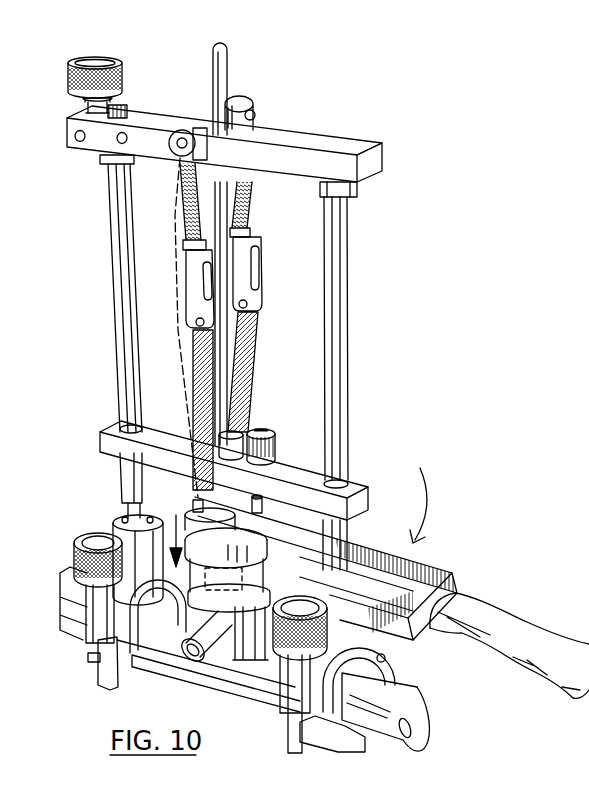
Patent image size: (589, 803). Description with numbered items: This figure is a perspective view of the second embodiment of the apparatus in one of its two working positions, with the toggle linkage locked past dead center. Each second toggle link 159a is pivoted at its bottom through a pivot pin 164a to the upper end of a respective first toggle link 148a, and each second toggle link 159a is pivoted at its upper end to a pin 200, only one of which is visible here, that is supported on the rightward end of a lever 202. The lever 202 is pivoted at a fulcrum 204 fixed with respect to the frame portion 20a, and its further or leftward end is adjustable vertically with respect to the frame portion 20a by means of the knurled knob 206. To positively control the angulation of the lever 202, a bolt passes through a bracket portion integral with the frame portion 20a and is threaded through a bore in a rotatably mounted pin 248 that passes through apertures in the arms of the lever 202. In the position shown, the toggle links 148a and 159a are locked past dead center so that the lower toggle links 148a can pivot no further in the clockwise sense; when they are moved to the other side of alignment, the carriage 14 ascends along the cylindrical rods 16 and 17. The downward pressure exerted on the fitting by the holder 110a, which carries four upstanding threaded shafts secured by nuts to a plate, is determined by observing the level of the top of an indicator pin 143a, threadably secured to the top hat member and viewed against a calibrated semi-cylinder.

The knurled knob 206 is at (122, 70).
The lever 202 is at (145, 133).
The pin 200 is at (181, 130).
The rotatably mounted pin 248 is at (80, 142).
The fulcrum 204 is at (124, 144).
The frame portion 20a is at (382, 148).
The cylindrical rod 17 is at (118, 230).
The cylindrical rod 16 is at (349, 288).
The second toggle link 159a is at (180, 203).
The pivot pin 164a is at (194, 320).
The first toggle link 148a is at (206, 400).
The carriage 14 is at (358, 478).
The indicator pin 143a is at (257, 497).
The holder 110a is at (277, 660).